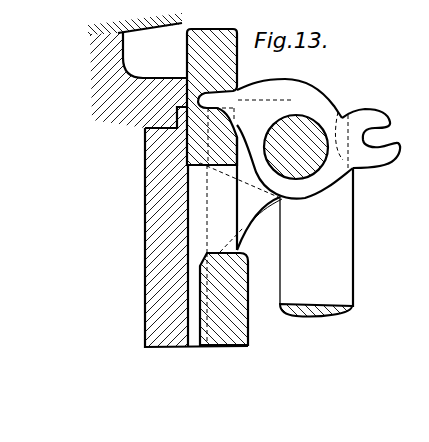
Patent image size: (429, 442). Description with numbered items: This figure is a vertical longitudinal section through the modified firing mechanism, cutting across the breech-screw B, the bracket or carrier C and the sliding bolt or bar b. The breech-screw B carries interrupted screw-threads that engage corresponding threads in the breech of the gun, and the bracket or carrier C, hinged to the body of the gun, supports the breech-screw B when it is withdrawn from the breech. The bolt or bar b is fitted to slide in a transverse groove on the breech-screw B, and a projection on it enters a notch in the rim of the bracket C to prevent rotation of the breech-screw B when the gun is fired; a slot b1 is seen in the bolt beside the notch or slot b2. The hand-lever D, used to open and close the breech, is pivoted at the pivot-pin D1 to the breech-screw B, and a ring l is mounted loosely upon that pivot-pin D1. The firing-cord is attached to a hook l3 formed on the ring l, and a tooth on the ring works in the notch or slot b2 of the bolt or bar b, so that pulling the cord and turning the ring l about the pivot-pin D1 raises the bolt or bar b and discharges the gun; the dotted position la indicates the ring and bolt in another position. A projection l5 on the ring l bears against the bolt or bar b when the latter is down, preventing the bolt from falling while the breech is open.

The bracket or carrier C is at (137, 70).
The breech-screw B is at (196, 227).
The bolt or bar b is at (225, 197).
The slot in bolt b1 is at (239, 195).
The notch or slot b2 is at (212, 97).
The ring l is at (295, 187).
The lever arm (alternate position) la is at (242, 100).
The projection l5 is at (278, 94).
The hook l3 is at (377, 138).
The hand-lever D is at (316, 214).
The pivot-pin D1 is at (296, 147).